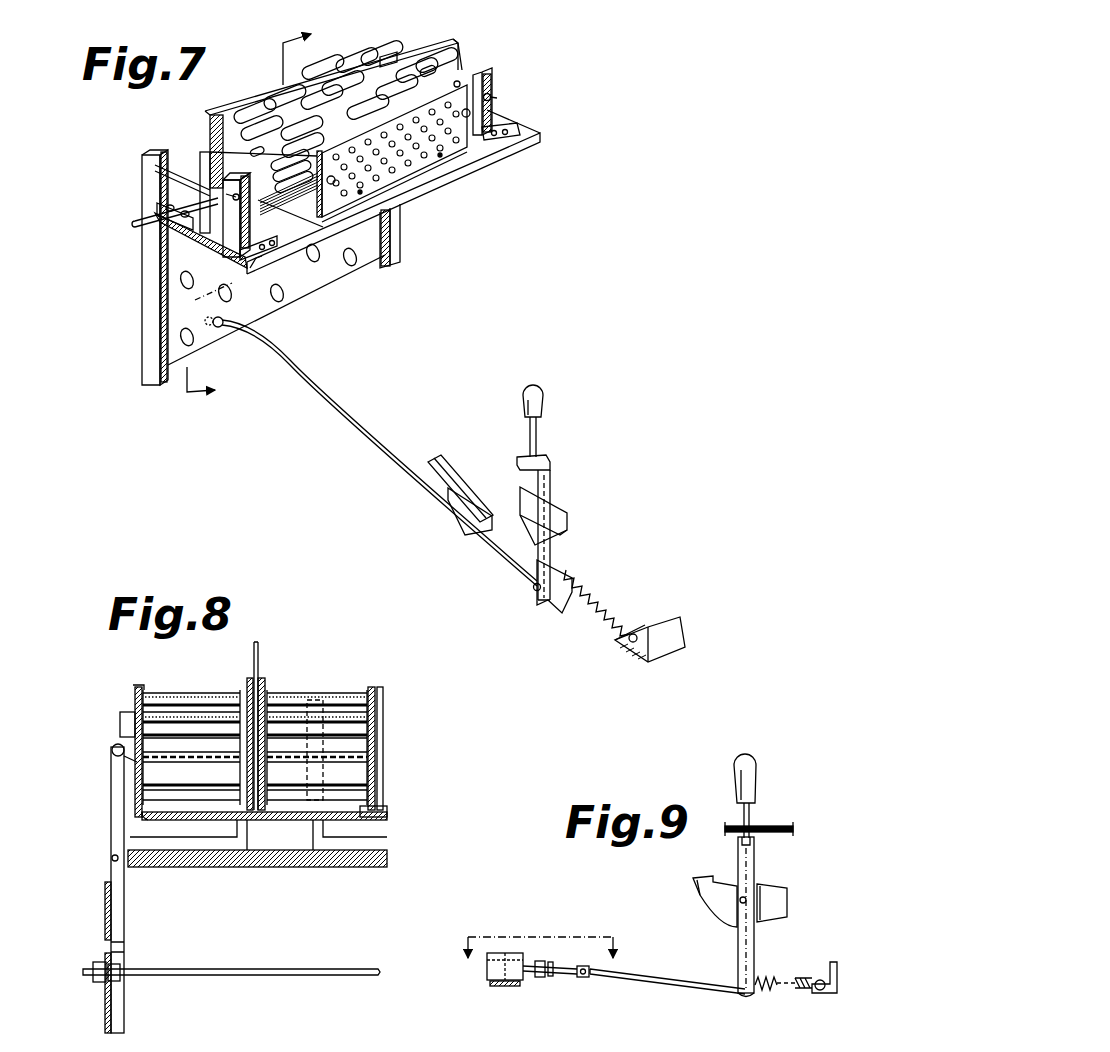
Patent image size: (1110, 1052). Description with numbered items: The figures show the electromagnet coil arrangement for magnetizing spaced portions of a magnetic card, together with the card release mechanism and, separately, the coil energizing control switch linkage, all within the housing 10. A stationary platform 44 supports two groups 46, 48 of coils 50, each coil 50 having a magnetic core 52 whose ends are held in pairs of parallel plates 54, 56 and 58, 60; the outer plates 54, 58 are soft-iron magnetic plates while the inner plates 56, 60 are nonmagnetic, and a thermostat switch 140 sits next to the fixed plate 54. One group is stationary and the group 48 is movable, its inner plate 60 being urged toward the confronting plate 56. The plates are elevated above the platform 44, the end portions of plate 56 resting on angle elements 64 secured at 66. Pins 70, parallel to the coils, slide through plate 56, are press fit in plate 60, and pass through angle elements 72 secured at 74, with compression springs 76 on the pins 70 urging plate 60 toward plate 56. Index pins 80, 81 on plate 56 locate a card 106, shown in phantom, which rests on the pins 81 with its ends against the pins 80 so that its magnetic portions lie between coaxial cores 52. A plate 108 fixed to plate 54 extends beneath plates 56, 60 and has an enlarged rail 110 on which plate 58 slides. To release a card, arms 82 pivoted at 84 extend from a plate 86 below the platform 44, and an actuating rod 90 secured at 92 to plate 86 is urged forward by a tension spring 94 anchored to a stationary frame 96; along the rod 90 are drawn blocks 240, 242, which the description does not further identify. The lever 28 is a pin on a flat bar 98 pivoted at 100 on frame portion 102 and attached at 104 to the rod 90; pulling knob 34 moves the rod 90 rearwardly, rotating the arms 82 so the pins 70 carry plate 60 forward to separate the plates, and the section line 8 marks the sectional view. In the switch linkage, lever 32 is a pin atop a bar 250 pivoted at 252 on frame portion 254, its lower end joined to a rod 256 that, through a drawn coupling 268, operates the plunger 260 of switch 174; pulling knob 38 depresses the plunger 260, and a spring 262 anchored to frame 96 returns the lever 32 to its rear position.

In FIG. 7, the section line 8- 8 is at (259, 211).
In FIG. 9, the housing 10 is at (543, 958).
In FIG. 7, the lever 28 is at (538, 441).
In FIG. 9, the lever 32 is at (751, 820).
In FIG. 7, the knob 34 is at (545, 388).
In FIG. 9, the knob 38 is at (758, 768).
In FIG. 7, the stationary platform 44 is at (535, 128).
In FIG. 8, the stationary platform 44 is at (360, 867).
In FIG. 7, the coil group 46 is at (372, 60).
In FIG. 7, the coil group 48 is at (462, 68).
In FIG. 7, the coils 50 is at (262, 100).
In FIG. 8, the coils 50 is at (180, 700).
In FIG. 7, the magnetic cores 52 is at (430, 142).
In FIG. 8, the magnetic cores 52 is at (135, 700).
In FIG. 7, the outer plate 54 is at (216, 112).
In FIG. 8, the outer plate 54 is at (137, 688).
In FIG. 7, the inner plate 56 is at (204, 150).
In FIG. 8, the inner plate 56 is at (247, 680).
In FIG. 7, the outer plate 58 is at (488, 68).
In FIG. 8, the outer plate 58 is at (383, 690).
In FIG. 7, the inner plate 60 is at (460, 82).
In FIG. 8, the inner plate 60 is at (265, 685).
In FIG. 7, the angle elements 64 is at (198, 170).
In FIG. 8, the angle elements 64 is at (218, 855).
In FIG. 7, the fastening 66 is at (162, 243).
In FIG. 7, the pins 70 is at (492, 96).
In FIG. 8, the pins 70 is at (113, 748).
In FIG. 7, the angle elements 72 is at (488, 122).
In FIG. 8, the angle elements 72 is at (385, 837).
In FIG. 7, the fastening 74 is at (504, 136).
In FIG. 7, the compression springs 76 is at (228, 196).
In FIG. 8, the compression springs 76 is at (310, 700).
In FIG. 7, the index pins 80 is at (437, 72).
In FIG. 7, the index pins 81 is at (362, 195).
In FIG. 8, the index pins 81 is at (140, 816).
In FIG. 7, the arms 82 is at (140, 187).
In FIG. 8, the arms 82 is at (110, 775).
In FIG. 7, the pivot 84 is at (130, 225).
In FIG. 8, the pivot 84 is at (111, 858).
In FIG. 7, the plate 86 is at (375, 262).
In FIG. 8, the plate 86 is at (105, 922).
In FIG. 7, the actuating rod 90 is at (270, 345).
In FIG. 8, the actuating rod 90 is at (300, 969).
In FIG. 7, the connection 92 is at (213, 332).
In FIG. 8, the connection 92 is at (95, 992).
In FIG. 7, the tension spring 94 is at (600, 605).
In FIG. 7, the stationary frame 96 is at (668, 656).
In FIG. 9, the stationary frame 96 is at (828, 996).
In FIG. 7, the flat bar 98 is at (553, 478).
In FIG. 7, the pivot 100 is at (533, 535).
In FIG. 7, the frame portion 102 is at (569, 519).
In FIG. 7, the attachment 104 is at (534, 591).
In FIG. 8, the card 106 is at (260, 645).
In FIG. 8, the plate 108 is at (277, 850).
In FIG. 8, the rail 110 is at (388, 810).
In FIG. 8, the thermostat switch 140 is at (120, 722).
In FIG. 9, the switch 174 is at (482, 978).
In FIG. 7, the lower block 240 is at (463, 522).
In FIG. 7, the upper block 242 is at (425, 470).
In FIG. 9, the bar 250 is at (755, 856).
In FIG. 9, the pivot 252 is at (746, 897).
In FIG. 9, the frame portion 254 is at (712, 905).
In FIG. 9, the rod 256 is at (650, 982).
In FIG. 9, the plunger 260 is at (522, 975).
In FIG. 9, the spring 262 is at (760, 991).
In FIG. 9, the coupling 268 is at (553, 974).